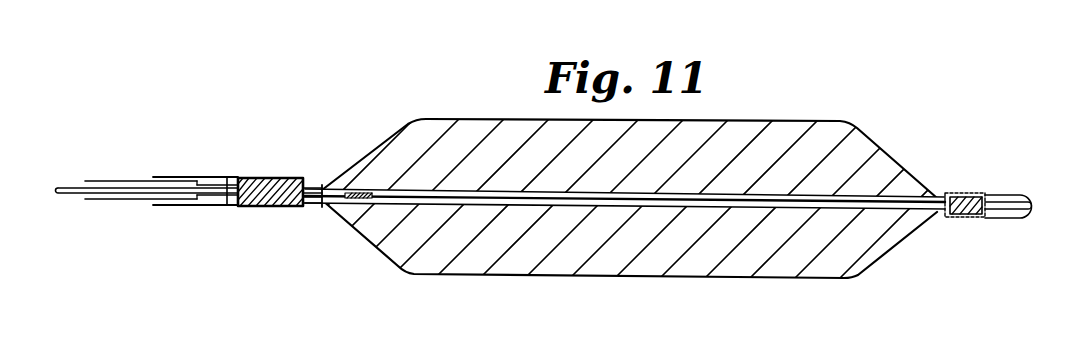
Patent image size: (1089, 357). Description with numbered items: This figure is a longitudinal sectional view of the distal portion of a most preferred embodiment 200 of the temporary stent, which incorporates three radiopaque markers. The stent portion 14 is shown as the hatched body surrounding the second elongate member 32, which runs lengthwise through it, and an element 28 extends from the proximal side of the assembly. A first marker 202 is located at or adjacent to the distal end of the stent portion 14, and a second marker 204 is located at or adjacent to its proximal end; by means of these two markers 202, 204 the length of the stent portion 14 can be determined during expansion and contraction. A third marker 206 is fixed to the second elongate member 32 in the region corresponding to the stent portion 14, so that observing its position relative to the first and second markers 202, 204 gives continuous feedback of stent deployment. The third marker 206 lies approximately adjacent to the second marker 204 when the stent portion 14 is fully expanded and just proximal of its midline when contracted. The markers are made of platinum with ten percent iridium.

The stent portion 14 is at (607, 275).
The core wire 28 is at (173, 210).
The second elongate member 32 is at (450, 206).
The embodiment 200 is at (917, 141).
The first marker 202 is at (968, 218).
The second marker 204 is at (288, 209).
The third marker 206 is at (350, 202).